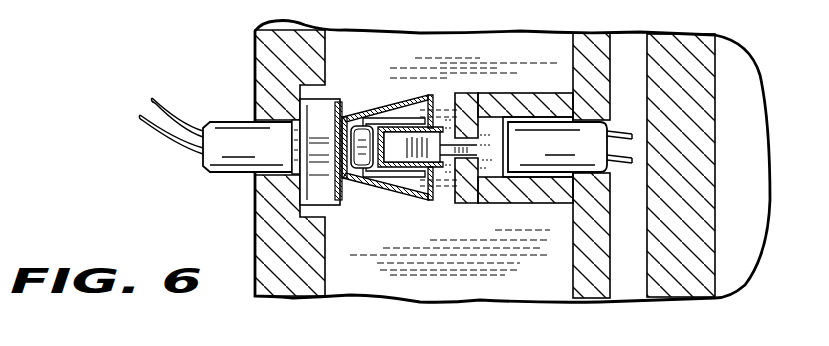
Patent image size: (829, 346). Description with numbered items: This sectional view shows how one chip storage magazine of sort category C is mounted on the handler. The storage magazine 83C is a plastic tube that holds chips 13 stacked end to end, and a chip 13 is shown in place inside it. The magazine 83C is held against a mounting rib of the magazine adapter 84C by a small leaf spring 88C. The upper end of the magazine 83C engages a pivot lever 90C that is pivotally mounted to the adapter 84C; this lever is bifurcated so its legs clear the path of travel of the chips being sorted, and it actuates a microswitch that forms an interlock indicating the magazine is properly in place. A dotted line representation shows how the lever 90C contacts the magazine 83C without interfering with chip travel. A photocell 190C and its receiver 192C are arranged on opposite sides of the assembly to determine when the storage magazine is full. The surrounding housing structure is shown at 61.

The housing 61 is at (695, 90).
The first cylinder (wire-connected) 190C is at (234, 138).
The second cylinder (wire-connected) 192C is at (543, 137).
The conical shell 88C is at (353, 106).
The inner liner/cartridge 83C is at (395, 197).
The capsule element 13 is at (356, 176).
The block 84C is at (470, 92).
The cavity 90C is at (447, 208).